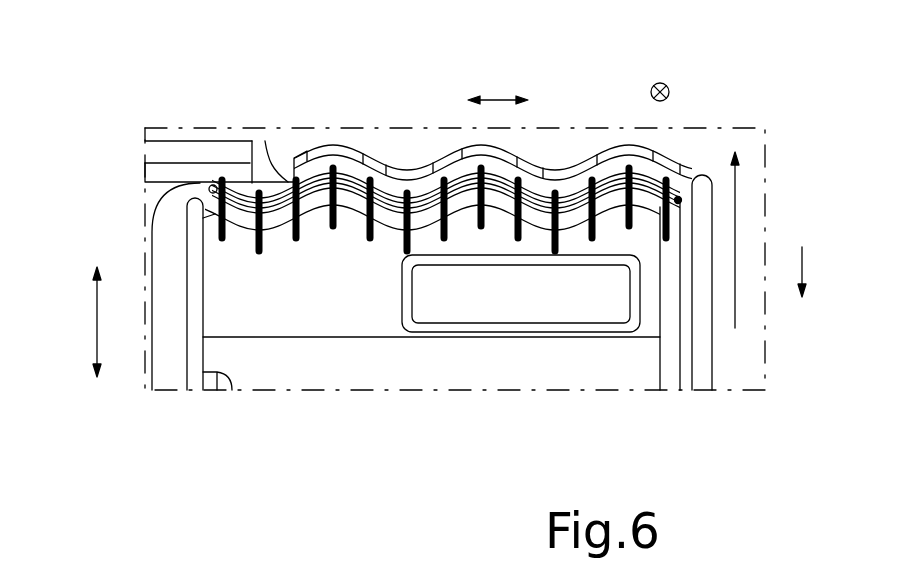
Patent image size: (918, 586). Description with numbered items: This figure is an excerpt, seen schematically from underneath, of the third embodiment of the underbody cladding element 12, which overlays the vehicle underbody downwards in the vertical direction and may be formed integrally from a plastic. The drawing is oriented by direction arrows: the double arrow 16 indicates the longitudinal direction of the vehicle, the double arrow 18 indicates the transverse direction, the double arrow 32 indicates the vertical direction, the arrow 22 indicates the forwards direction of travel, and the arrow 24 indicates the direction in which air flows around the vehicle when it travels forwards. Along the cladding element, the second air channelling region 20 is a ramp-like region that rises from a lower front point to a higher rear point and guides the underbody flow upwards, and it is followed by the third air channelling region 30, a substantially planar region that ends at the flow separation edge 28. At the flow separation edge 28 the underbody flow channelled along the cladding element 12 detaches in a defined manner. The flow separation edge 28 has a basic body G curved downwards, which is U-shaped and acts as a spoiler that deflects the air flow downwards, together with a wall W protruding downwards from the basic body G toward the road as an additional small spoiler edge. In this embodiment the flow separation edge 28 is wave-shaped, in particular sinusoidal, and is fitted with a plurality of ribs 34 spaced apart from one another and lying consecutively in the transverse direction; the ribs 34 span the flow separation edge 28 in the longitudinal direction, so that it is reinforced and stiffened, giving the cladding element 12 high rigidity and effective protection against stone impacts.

The underbody cladding element 12 is at (670, 389).
The double arrow 16 is at (95, 330).
The double arrow 18 is at (498, 97).
The second air channelling region 20 is at (648, 360).
The arrow 22 is at (805, 270).
The arrow 24 is at (735, 215).
The flow separation edge 28 is at (670, 187).
The third air channelling region 30 is at (230, 293).
The double arrow 32 is at (660, 83).
The ribs 34 is at (250, 140).
The basic body G is at (604, 150).
The wall W is at (420, 165).